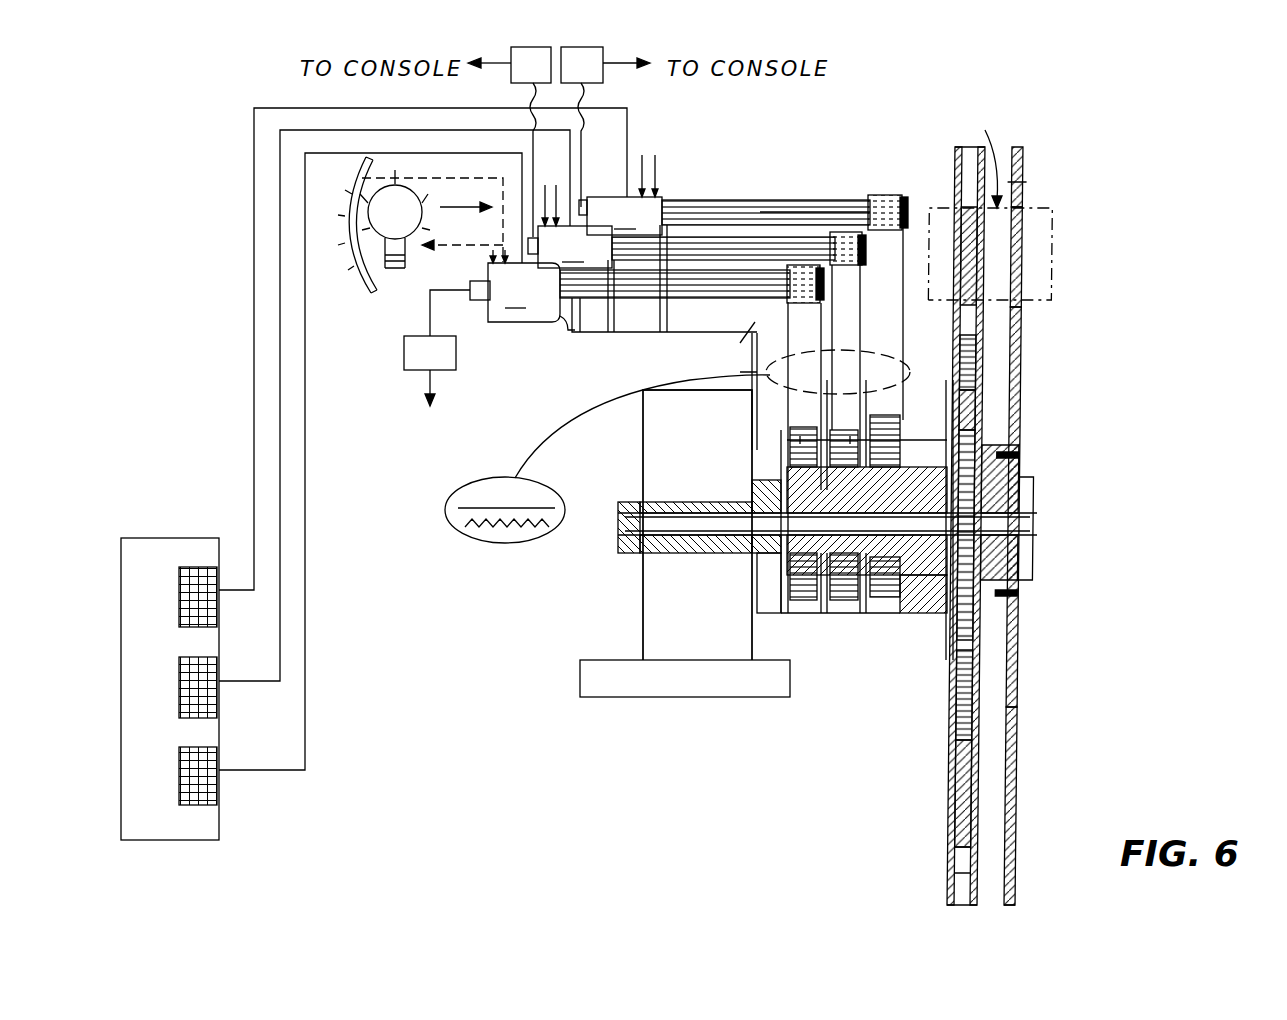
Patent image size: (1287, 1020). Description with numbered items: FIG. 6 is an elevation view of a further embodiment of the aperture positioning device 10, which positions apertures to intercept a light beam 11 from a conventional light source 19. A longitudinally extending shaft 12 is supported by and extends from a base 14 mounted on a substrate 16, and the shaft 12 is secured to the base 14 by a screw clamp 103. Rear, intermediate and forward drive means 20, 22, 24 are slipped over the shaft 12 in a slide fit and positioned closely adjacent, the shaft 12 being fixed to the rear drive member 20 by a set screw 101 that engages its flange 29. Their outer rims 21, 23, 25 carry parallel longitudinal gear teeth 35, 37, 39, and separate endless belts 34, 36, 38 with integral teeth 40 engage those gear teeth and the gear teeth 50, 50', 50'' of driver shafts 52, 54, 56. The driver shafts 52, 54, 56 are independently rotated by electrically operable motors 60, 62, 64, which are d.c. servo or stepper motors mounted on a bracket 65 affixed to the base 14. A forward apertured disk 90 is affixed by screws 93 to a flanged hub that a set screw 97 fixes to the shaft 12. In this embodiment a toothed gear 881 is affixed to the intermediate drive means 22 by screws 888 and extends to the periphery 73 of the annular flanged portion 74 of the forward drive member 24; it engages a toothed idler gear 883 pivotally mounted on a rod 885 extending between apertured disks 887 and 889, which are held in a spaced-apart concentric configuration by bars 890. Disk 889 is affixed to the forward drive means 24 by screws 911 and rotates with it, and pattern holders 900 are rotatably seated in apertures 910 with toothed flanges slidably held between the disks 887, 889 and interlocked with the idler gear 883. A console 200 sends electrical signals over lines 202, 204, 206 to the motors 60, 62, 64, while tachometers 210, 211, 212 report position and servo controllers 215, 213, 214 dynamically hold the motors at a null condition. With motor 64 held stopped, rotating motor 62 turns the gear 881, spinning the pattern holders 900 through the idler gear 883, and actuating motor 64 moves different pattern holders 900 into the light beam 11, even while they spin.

The aperture positioning device 10 is at (604, 465).
The light beam 11 is at (470, 176).
The longitudinally extending shaft 12 is at (622, 520).
The base 14 is at (708, 433).
The substrate 16 is at (612, 688).
The light source 19 is at (405, 224).
The rear drive means 20 is at (770, 581).
The outer rim 21 is at (787, 442).
The intermediate drive means 22 is at (815, 614).
The outer rim 23 is at (844, 431).
The forward drive means 24 is at (845, 614).
The outer rim 25 is at (885, 428).
The flange 29 is at (760, 556).
The endless belt 34 is at (772, 335).
The gear teeth 35 is at (798, 614).
The endless belt 36 is at (790, 391).
The gear teeth 37 is at (875, 614).
The endless belt 38 is at (906, 218).
The gear teeth 39 is at (900, 614).
The integral teeth 40 is at (506, 545).
The gear teeth 50 is at (675, 300).
The gear teeth 50' is at (739, 322).
The gear teeth 50'' is at (815, 191).
The driver shaft 52 is at (731, 346).
The driver shaft 54 is at (712, 262).
The driver shaft 56 is at (720, 200).
The electrically operable motor 60 is at (523, 279).
The electrically operable motor 62 is at (570, 218).
The electrically operable motor 64 is at (625, 187).
The bracket 65 is at (575, 337).
The periphery 73 is at (920, 640).
The annular flange portion 74 is at (914, 417).
The forward apertured disk 90 is at (1013, 718).
The screws 93 is at (1024, 456).
The set screw 97 is at (1038, 472).
The set screw 101 is at (750, 483).
The screw clamp 103 is at (630, 502).
The console 200 is at (242, 829).
The line 202 is at (307, 637).
The line 204 is at (282, 513).
The line 206 is at (254, 506).
The tachometer 210 is at (478, 298).
The tachometer 211 is at (558, 323).
The tachometer 212 is at (583, 201).
The servo controller 213 is at (513, 83).
The servo controller 214 is at (608, 83).
The servo controller 215 is at (404, 350).
The toothed gear 881 is at (1024, 440).
The toothed idler gear 883 is at (985, 393).
The rod 885 is at (1015, 386).
The apertured disk 887 is at (952, 880).
The screws 888 is at (1012, 520).
The apertured disk 889 is at (952, 855).
The bars 890 is at (955, 700).
The pattern holder 900 is at (1025, 200).
The apertures 910 is at (1024, 182).
The screws 911 is at (950, 420).